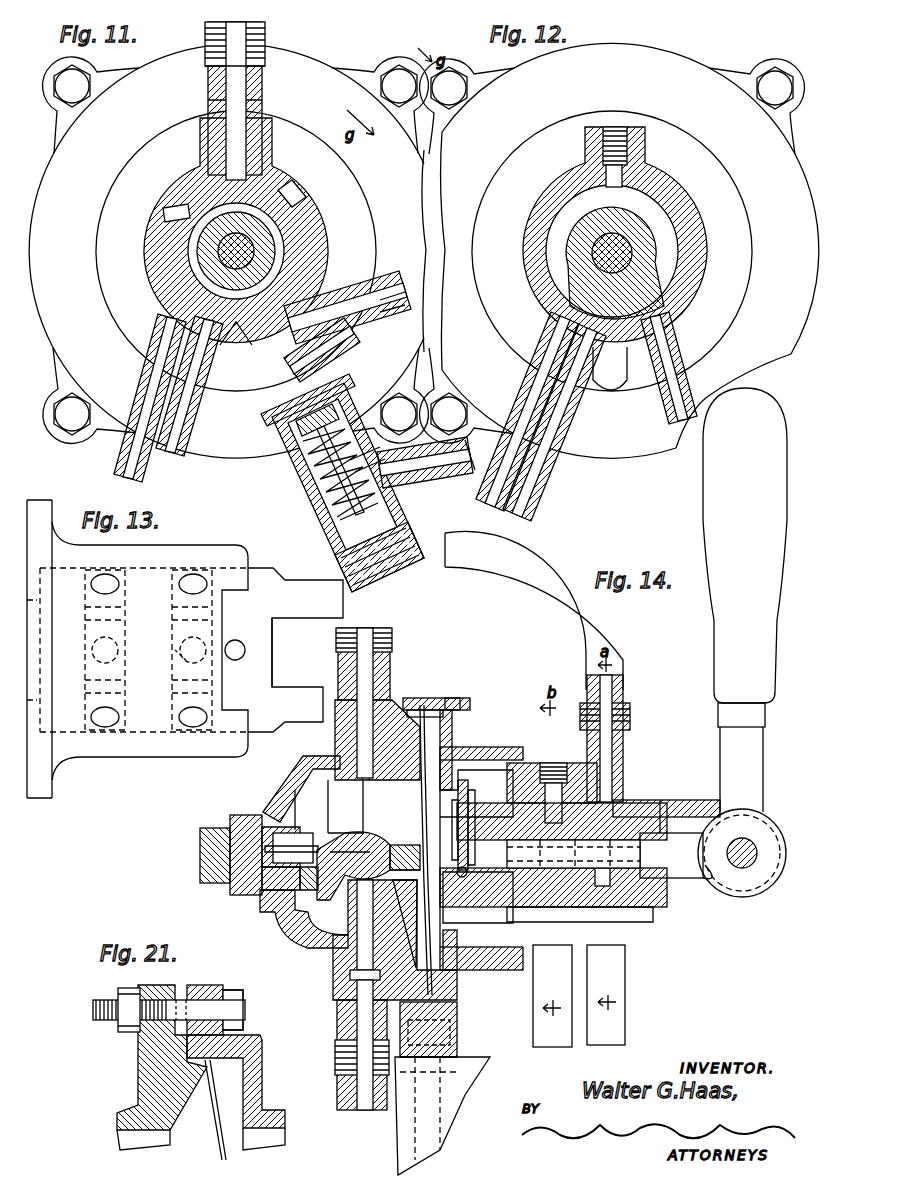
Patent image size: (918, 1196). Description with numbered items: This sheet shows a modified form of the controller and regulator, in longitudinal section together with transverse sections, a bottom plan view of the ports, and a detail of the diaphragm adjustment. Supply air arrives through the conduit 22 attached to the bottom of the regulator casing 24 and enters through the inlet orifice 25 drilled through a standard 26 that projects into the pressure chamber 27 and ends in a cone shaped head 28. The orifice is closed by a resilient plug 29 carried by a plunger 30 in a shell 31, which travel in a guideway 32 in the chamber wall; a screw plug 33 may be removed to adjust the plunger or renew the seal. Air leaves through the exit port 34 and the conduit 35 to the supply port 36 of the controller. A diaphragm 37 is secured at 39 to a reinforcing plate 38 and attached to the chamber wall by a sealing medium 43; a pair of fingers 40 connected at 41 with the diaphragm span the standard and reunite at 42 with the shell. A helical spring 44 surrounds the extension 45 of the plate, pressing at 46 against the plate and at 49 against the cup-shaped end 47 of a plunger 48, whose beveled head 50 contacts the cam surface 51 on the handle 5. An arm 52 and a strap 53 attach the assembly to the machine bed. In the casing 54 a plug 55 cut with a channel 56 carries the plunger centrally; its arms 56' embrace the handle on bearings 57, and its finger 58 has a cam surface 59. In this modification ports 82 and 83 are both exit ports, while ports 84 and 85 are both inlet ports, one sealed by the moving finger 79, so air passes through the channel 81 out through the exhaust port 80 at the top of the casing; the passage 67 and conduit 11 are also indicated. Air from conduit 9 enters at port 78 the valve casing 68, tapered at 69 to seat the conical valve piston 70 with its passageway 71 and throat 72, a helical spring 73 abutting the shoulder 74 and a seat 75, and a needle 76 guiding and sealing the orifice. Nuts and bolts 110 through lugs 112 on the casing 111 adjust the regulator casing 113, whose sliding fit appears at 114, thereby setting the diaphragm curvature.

In FIG. 14, the handle 5 is at (765, 676).
In FIG. 11, the conduit 9 is at (452, 478).
In FIG. 11, the pipe 11 is at (395, 292).
In FIG. 14, the conduit 22 is at (352, 1087).
In FIG. 14, the regulator casing 24 is at (344, 983).
In FIG. 14, the inlet orifice 25 is at (372, 840).
In FIG. 14, the standard 26 is at (415, 867).
In FIG. 14, the pressure chamber 27 is at (333, 765).
In FIG. 14, the cone shaped head 28 is at (412, 812).
In FIG. 14, the plug 29 is at (335, 842).
In FIG. 14, the plunger 30 is at (288, 896).
In FIG. 14, the shell 31 is at (306, 890).
In FIG. 14, the guideway 32 is at (292, 920).
In FIG. 14, the screw plug 33 is at (228, 885).
In FIG. 14, the exit port 34 is at (345, 769).
In FIG. 14, the conduit 35 is at (366, 630).
In FIG. 11, the supply port 36 is at (232, 93).
In FIG. 14, the supply port 36 is at (628, 694).
In FIG. 14, the diaphragm 37 is at (428, 719).
In FIG. 21, the diaphragm 37 is at (218, 1142).
In FIG. 14, the reinforcing plate 38 is at (447, 738).
In FIG. 14, the securing point 39 is at (415, 802).
In FIG. 14, the fingers 40 is at (405, 848).
In FIG. 14, the connection 41 is at (405, 860).
In FIG. 14, the juncture 42 is at (320, 848).
In FIG. 14, the sealing medium 43 is at (448, 698).
In FIG. 14, the helical spring 44 is at (455, 845).
In FIG. 14, the extension 45 is at (446, 840).
In FIG. 14, the pressing point 46 is at (440, 835).
In FIG. 14, the cup-shaped end 47 is at (475, 882).
In FIG. 11, the plunger 48 is at (236, 234).
In FIG. 12, the plunger 48 is at (613, 240).
In FIG. 14, the plunger 48 is at (628, 863).
In FIG. 14, the pressing point 49 is at (462, 868).
In FIG. 14, the beveled head 50 is at (687, 865).
In FIG. 14, the cam surface 51 is at (770, 897).
In FIG. 14, the arm 52 is at (488, 1064).
In FIG. 14, the strap 53 is at (462, 1058).
In FIG. 11, the casing 54 is at (318, 216).
In FIG. 13, the casing 54 is at (240, 545).
In FIG. 14, the casing 54 is at (627, 785).
In FIG. 11, the plug 55 is at (290, 195).
In FIG. 13, the plug 55 is at (280, 573).
In FIG. 14, the plug 55 is at (627, 795).
In FIG. 11, the channel 56 is at (154, 209).
In FIG. 13, the channel 56 is at (240, 629).
In FIG. 14, the channel 56 is at (638, 894).
In FIG. 13, the arms 56' is at (294, 650).
In FIG. 14, the arms 56' is at (709, 901).
In FIG. 14, the bearings 57 is at (745, 869).
In FIG. 14, the finger 58 is at (687, 800).
In FIG. 14, the cam surface 59 is at (715, 800).
In FIG. 11, the notch 67 is at (237, 346).
In FIG. 13, the notch 67 is at (177, 663).
In FIG. 14, the notch 67 is at (608, 900).
In FIG. 11, the valve casing 68 is at (272, 424).
In FIG. 11, the seat 69 is at (290, 455).
In FIG. 11, the valve piston 70 is at (342, 430).
In FIG. 11, the passageway 71 is at (318, 462).
In FIG. 11, the throat 72 is at (322, 503).
In FIG. 11, the helical spring 73 is at (340, 500).
In FIG. 11, the shoulder 74 is at (330, 483).
In FIG. 11, the seat 75 is at (362, 542).
In FIG. 11, the needle 76 is at (350, 522).
In FIG. 11, the port 78 is at (440, 482).
In FIG. 12, the moving finger 79 is at (641, 292).
In FIG. 14, the moving finger 79 is at (562, 908).
In FIG. 12, the exhaust port 80 is at (604, 126).
In FIG. 13, the exhaust port 80 is at (112, 655).
In FIG. 14, the exhaust port 80 is at (553, 762).
In FIG. 12, the channel 81 is at (560, 229).
In FIG. 13, the channel 81 is at (118, 637).
In FIG. 14, the channel 81 is at (530, 792).
In FIG. 11, the exit port 82 is at (198, 322).
In FIG. 13, the exit port 82 is at (195, 723).
In FIG. 11, the exit port 83 is at (310, 300).
In FIG. 13, the exit port 83 is at (196, 576).
In FIG. 12, the inlet port 84 is at (572, 322).
In FIG. 13, the inlet port 84 is at (107, 723).
In FIG. 12, the inlet port 85 is at (675, 318).
In FIG. 13, the inlet port 85 is at (104, 576).
In FIG. 11, the nuts and bolts 110 is at (80, 90).
In FIG. 12, the nuts and bolts 110 is at (456, 92).
In FIG. 21, the nuts and bolts 110 is at (230, 990).
In FIG. 11, the casing 111 is at (327, 72).
In FIG. 12, the casing 111 is at (657, 58).
In FIG. 21, the casing 111 is at (263, 1052).
In FIG. 11, the lugs 112 is at (100, 74).
In FIG. 12, the lugs 112 is at (468, 75).
In FIG. 21, the lugs 112 is at (207, 986).
In FIG. 14, the regulator casing 113 is at (418, 696).
In FIG. 21, the regulator casing 113 is at (137, 1053).
In FIG. 14, the sliding fit 114 is at (422, 710).